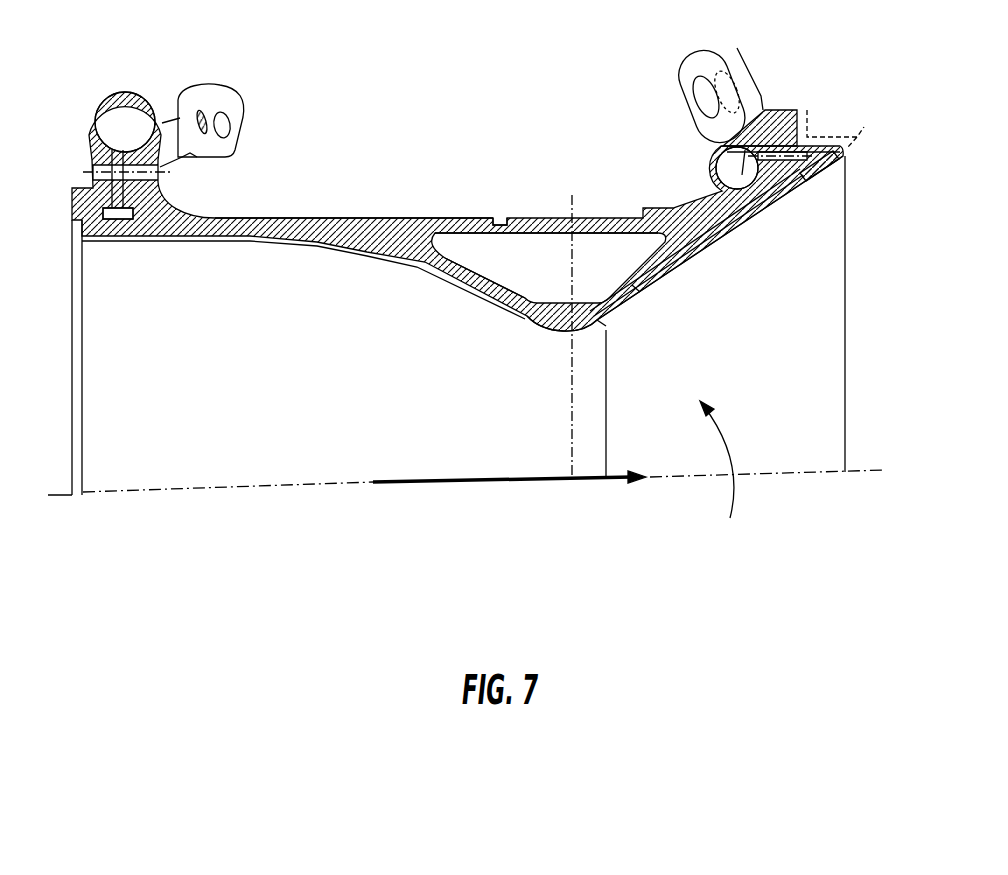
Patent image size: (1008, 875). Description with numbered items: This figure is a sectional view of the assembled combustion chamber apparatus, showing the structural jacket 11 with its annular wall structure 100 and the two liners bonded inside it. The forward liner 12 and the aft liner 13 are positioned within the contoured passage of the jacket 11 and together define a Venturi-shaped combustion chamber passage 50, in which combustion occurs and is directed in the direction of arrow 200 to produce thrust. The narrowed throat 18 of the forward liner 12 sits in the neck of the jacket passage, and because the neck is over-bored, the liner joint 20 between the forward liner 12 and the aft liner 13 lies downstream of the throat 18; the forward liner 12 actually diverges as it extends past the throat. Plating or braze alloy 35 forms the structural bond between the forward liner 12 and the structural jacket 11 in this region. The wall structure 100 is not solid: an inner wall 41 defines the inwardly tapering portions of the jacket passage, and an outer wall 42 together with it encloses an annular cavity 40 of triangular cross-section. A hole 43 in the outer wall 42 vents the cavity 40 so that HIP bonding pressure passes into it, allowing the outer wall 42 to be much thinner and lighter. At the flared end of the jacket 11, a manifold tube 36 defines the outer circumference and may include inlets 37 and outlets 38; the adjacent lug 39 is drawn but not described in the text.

The annular wall structure 100 is at (313, 218).
The structural jacket 11 is at (215, 218).
The forward liner 12 is at (322, 243).
The aft liner 13 is at (733, 227).
The throat 18 is at (582, 330).
The liner joint 20 is at (602, 327).
The braze alloy 35 is at (547, 323).
The manifold tube 36 is at (125, 97).
The inlets 37 is at (108, 233).
The outlets 38 is at (810, 173).
The mounting lug 39 is at (240, 107).
The annular cavity 40 is at (458, 253).
The inner wall 41 is at (653, 280).
The outer wall 42 is at (545, 229).
The hole 43 is at (508, 220).
The combustion chamber passage 50 is at (720, 481).
The arrow 200 is at (463, 483).